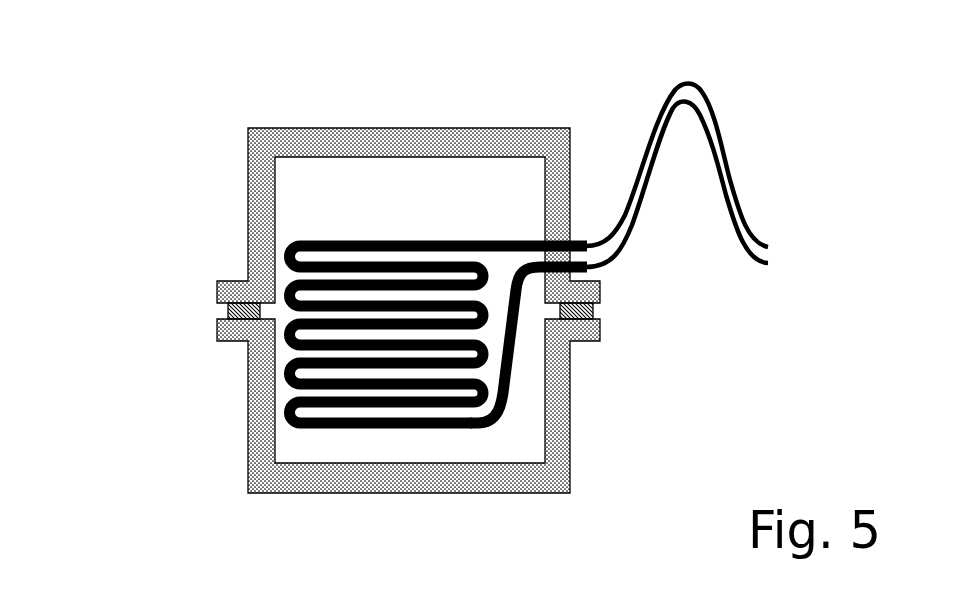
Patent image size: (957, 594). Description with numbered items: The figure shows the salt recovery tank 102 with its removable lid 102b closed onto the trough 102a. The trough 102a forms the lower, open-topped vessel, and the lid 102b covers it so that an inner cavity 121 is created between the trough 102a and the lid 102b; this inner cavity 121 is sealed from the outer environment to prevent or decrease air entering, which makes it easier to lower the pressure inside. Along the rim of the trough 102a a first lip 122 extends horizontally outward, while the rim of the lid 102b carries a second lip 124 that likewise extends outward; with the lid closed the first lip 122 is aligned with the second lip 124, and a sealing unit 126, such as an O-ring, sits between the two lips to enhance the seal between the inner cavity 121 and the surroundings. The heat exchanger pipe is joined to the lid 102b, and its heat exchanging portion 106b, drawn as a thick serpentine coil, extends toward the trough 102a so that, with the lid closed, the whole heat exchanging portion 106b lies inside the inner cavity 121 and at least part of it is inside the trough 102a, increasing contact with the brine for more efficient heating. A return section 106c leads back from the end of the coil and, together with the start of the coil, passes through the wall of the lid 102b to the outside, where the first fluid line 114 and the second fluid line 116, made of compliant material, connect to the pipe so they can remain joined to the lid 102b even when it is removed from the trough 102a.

The salt recovery tank 102 is at (379, 268).
The trough 102a is at (560, 457).
The removable lid 102b is at (268, 185).
The inner cavity 121 is at (367, 212).
The heat exchanging portion 106b is at (453, 240).
The return tube section 106c is at (586, 270).
The first fluid line 114 is at (765, 246).
The second fluid line 116 is at (764, 270).
The first lip 122 is at (237, 341).
The second lip 124 is at (216, 289).
The sealing unit 126 is at (228, 310).